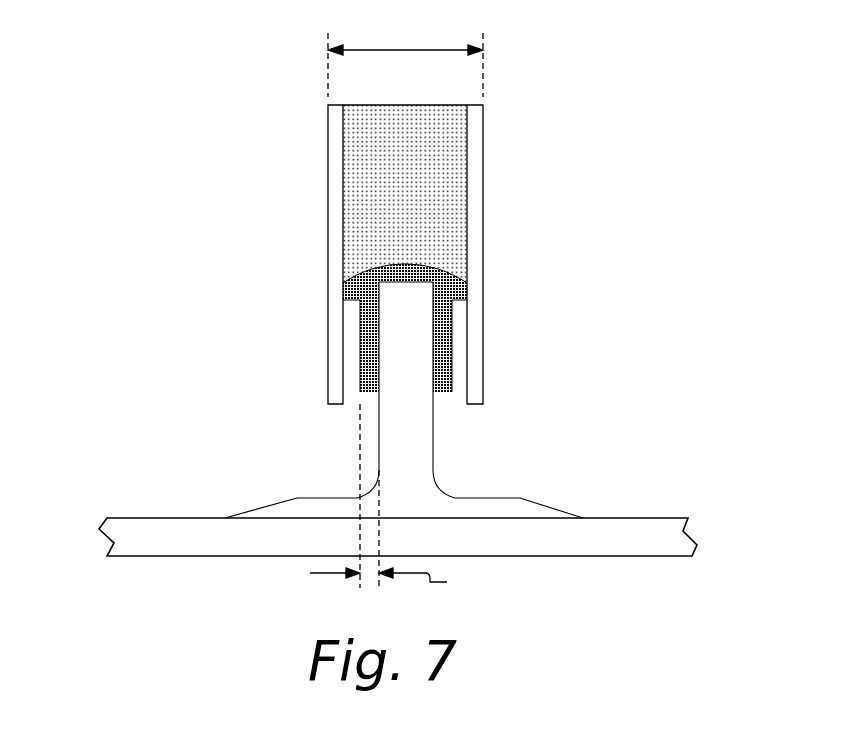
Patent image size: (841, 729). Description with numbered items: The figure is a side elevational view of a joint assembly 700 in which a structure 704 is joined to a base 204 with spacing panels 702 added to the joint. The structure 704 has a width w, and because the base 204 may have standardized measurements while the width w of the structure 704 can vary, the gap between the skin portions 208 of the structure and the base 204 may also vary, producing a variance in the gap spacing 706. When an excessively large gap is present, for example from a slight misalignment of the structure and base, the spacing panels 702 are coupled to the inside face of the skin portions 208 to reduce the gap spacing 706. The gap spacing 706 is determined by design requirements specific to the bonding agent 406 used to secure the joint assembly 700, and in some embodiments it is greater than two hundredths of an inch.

The joint assembly 700 is at (137, 70).
The skin portions 208 is at (328, 180).
The structure 704 is at (525, 128).
The bonding agent 406 is at (463, 277).
The gap spacing 706 is at (408, 500).
The spacing panels 702 is at (350, 405).
The base 204 is at (570, 480).
The width w is at (433, 50).